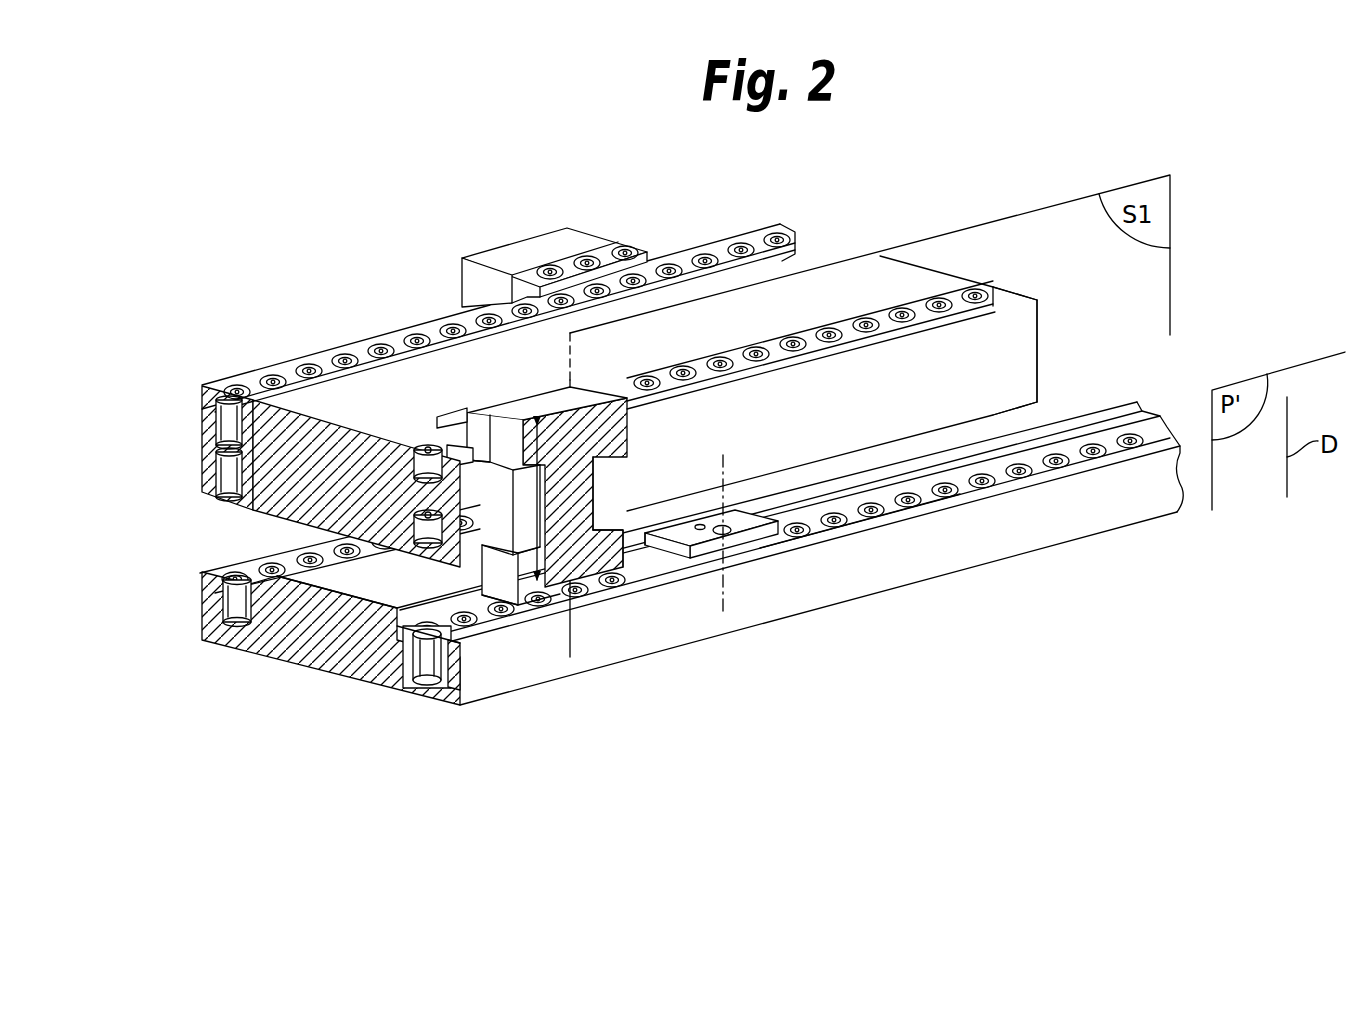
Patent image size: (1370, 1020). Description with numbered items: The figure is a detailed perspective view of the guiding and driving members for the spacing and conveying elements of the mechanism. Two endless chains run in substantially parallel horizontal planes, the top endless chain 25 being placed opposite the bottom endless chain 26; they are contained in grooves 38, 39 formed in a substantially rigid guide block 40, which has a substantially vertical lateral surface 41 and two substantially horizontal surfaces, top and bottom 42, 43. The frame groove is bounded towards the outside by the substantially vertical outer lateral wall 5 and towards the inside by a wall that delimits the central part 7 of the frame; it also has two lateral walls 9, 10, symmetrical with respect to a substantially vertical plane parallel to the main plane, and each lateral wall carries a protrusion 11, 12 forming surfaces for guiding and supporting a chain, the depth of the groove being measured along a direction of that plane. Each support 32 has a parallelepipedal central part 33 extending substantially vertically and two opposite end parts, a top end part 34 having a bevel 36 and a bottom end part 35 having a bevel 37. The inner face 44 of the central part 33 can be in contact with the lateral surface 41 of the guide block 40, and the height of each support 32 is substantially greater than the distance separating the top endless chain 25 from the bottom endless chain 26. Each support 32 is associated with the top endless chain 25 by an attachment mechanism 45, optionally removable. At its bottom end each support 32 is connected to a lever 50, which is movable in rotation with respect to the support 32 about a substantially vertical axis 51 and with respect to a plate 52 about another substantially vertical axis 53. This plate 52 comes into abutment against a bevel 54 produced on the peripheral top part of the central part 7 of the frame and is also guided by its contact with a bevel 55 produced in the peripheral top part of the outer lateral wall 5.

The outer lateral wall 5 is at (965, 533).
The central part 7 is at (338, 573).
The lateral wall 9 is at (455, 665).
The lateral wall 10 is at (413, 684).
The protrusion 11 is at (447, 658).
The protrusion 12 is at (370, 668).
The top endless chain 25 is at (826, 330).
The bottom endless chain 26 is at (876, 520).
The support 32 is at (604, 506).
The central part 33 is at (582, 502).
The top end part 34 is at (598, 422).
The bottom end part 35 is at (590, 557).
The bevel 36 is at (470, 433).
The bevel 37 is at (493, 560).
The groove 38 is at (223, 440).
The groove 39 is at (208, 464).
The guide block 40 is at (768, 285).
The lateral surface 41 is at (982, 367).
The top surface 42 is at (996, 292).
The bottom surface 43 is at (1003, 421).
The inner face 44 is at (500, 487).
The attachment mechanism 45 is at (630, 248).
The lever 50 is at (660, 553).
The axis 51 is at (568, 368).
The plate 52 is at (755, 546).
The axis 53 is at (730, 496).
The bevel 54 is at (395, 610).
The bevel 55 is at (905, 525).